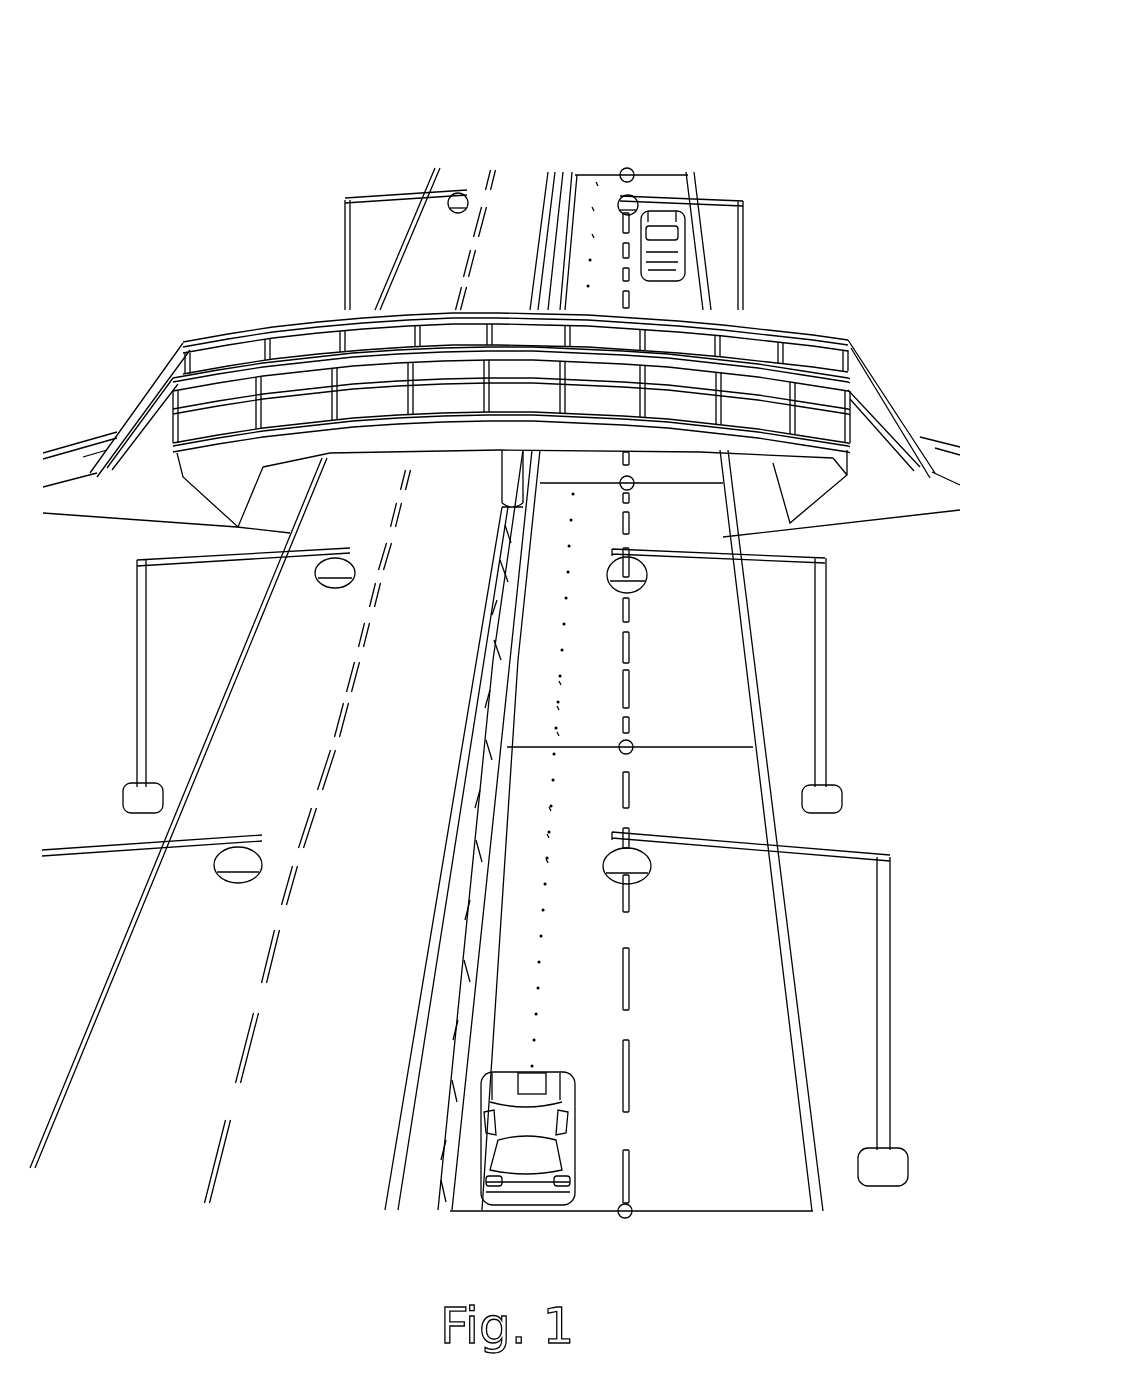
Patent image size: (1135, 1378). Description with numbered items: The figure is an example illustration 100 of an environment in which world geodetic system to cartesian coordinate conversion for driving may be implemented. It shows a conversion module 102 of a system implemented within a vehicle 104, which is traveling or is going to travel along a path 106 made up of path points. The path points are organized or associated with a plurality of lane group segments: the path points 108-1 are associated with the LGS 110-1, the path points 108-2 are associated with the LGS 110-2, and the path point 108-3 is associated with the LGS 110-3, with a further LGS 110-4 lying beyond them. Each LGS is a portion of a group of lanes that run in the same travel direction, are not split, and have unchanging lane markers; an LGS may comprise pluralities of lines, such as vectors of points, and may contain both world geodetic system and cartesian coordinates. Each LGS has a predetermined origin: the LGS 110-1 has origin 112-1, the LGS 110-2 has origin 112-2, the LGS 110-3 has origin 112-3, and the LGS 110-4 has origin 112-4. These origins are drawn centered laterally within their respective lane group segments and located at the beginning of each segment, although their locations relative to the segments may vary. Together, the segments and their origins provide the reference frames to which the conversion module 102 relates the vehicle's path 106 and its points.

The example illustration 100 is at (838, 42).
The conversion module 102 is at (533, 1083).
The vehicle 104 is at (428, 1093).
The path 106 is at (533, 920).
The path points 108-1 is at (547, 860).
The path points 108-2 is at (558, 733).
The path point 108-3 is at (593, 235).
The LGS 110-1 is at (730, 1057).
The LGS 110-2 is at (690, 717).
The LGS 110-3 is at (672, 303).
The LGS 110-4 is at (667, 167).
The origin 112-1 is at (628, 1205).
The origin 112-2 is at (628, 738).
The origin 112-3 is at (632, 489).
The origin 112-4 is at (625, 168).